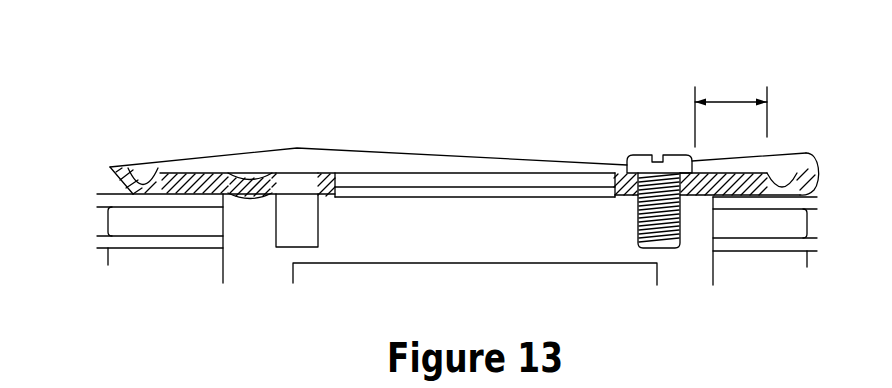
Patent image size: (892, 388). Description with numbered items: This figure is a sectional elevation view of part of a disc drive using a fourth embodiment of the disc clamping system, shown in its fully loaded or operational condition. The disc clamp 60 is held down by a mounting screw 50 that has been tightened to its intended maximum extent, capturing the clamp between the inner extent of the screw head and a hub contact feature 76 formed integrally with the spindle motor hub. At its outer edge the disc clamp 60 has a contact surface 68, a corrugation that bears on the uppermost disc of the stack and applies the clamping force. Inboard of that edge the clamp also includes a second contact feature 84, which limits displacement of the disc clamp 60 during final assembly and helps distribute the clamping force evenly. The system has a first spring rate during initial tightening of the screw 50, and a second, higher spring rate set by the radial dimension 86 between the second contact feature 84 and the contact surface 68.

The disc clamp 60 is at (297, 148).
The disc clamp contact surface 68 is at (150, 168).
The second contact feature 84 is at (250, 175).
The mounting screw 50 is at (625, 160).
The hub contact feature 76 is at (626, 190).
The radial dimension 86 is at (730, 102).